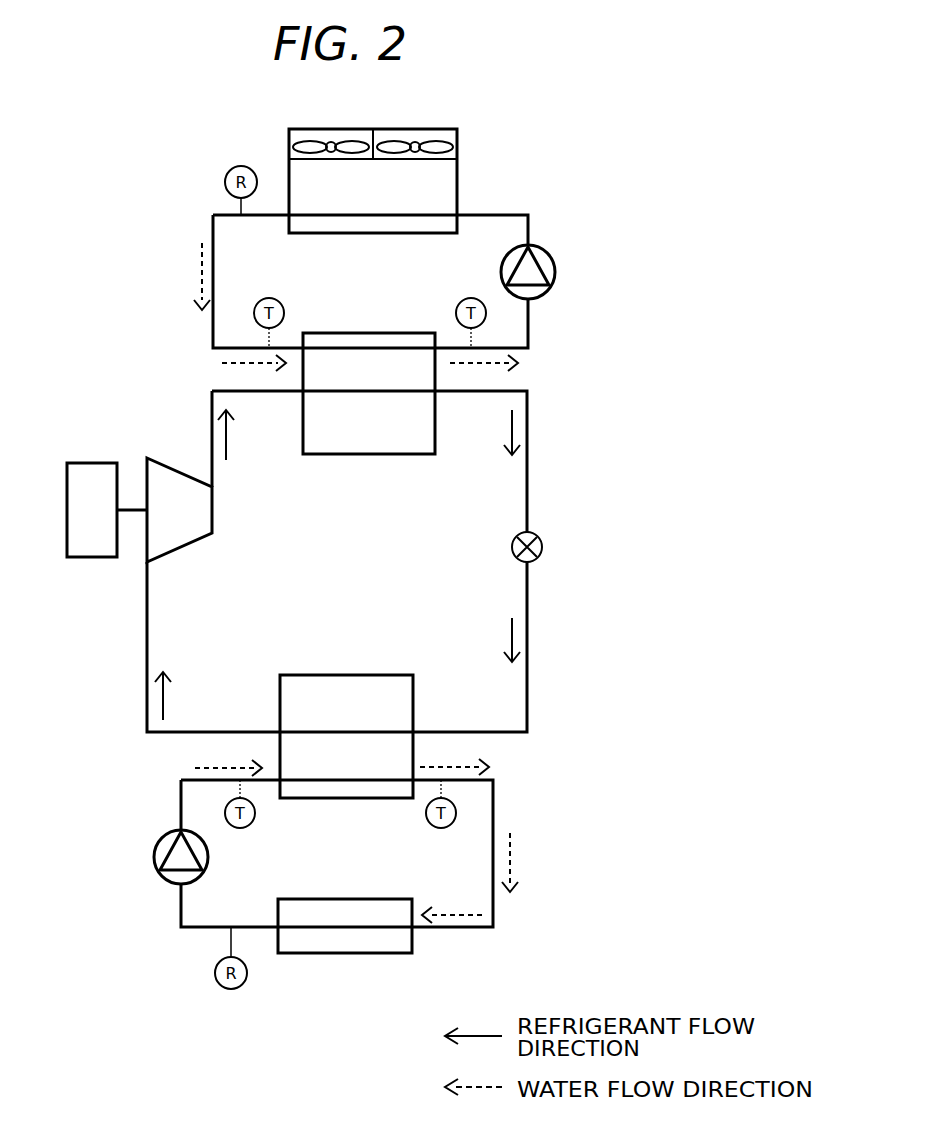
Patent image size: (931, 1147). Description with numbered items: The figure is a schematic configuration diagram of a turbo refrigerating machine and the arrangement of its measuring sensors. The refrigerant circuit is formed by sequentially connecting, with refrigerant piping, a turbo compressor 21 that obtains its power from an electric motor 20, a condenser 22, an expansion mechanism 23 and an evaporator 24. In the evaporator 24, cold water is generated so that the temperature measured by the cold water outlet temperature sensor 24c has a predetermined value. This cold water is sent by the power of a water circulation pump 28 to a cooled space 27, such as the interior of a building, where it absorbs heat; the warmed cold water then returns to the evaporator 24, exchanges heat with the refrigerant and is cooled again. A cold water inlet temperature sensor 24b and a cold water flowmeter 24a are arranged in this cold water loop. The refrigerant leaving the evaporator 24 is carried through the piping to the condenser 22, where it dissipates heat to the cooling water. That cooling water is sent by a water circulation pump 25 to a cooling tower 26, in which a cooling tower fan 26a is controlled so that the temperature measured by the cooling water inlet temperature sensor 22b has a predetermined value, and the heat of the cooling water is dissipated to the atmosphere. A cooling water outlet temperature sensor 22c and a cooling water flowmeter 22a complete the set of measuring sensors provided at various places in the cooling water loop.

The electric motor 20 is at (90, 463).
The turbo compressor 21 is at (175, 462).
The condenser 22 is at (395, 455).
The cooling water flowmeter 22a is at (225, 180).
The cooling water inlet temperature sensor 22b is at (280, 302).
The cooling water outlet temperature sensor 22c is at (460, 302).
The expansion mechanism 23 is at (543, 547).
The evaporator 24 is at (340, 675).
The cold water flowmeter 24a is at (233, 990).
The cold water inlet temperature sensor 24b is at (252, 825).
The cold water outlet temperature sensor 24c is at (430, 825).
The water circulation pump 25 is at (556, 263).
The cooling tower 26 is at (457, 185).
The cooling tower fan 26a is at (457, 132).
The cooled space 27 is at (368, 953).
The water circulation pump 28 is at (155, 845).